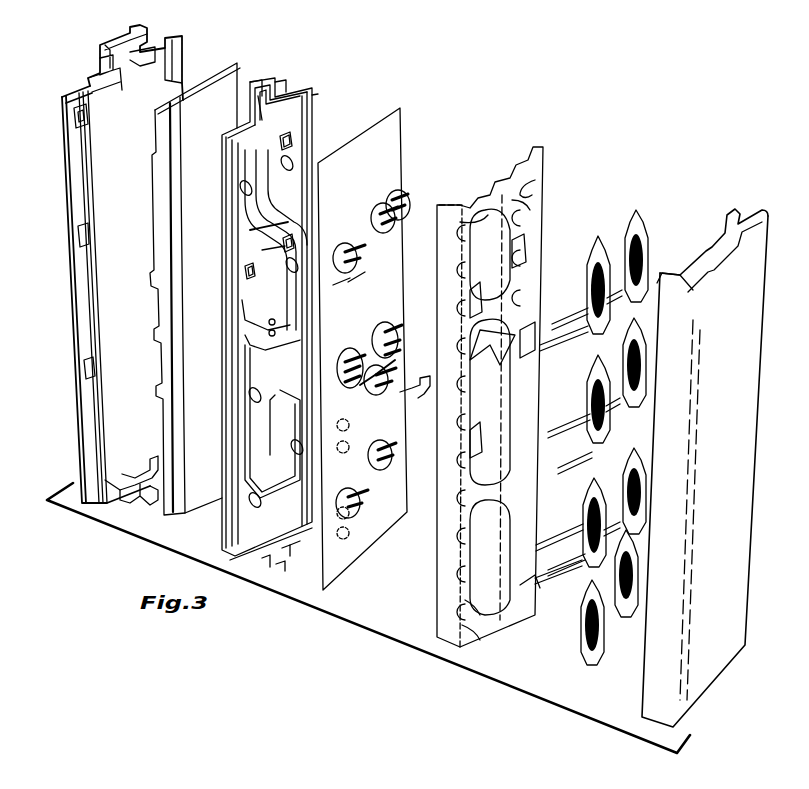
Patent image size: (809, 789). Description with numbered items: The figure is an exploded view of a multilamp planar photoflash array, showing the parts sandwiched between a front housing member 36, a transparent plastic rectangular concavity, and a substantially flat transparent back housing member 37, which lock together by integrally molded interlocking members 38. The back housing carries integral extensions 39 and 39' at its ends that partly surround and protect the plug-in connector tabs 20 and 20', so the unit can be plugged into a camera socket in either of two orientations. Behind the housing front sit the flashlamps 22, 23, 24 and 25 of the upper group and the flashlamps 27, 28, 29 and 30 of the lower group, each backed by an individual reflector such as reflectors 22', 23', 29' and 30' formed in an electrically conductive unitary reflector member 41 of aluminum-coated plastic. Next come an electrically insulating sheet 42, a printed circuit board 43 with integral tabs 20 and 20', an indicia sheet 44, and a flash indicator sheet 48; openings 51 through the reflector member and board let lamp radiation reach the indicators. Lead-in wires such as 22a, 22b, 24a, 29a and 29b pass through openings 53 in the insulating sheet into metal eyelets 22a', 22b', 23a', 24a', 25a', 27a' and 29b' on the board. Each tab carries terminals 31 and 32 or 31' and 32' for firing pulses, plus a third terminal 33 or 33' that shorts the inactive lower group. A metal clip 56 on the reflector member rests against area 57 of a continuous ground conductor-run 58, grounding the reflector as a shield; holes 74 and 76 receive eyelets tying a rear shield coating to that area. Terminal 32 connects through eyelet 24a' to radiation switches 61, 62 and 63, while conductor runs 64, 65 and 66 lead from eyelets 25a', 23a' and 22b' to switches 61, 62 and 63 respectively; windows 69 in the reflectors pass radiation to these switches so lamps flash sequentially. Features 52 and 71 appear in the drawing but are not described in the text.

The plug-in connector tab 20 is at (304, 527).
The second plug-in connector tab 20' is at (300, 80).
The flashlamp 22 is at (597, 272).
The reflector 22' is at (445, 232).
The lead-in wire 22a is at (564, 343).
The metal eyelet 22a' is at (344, 284).
The lead-in wire 22b is at (568, 311).
The metal eyelet 22b' is at (373, 265).
The flashlamp 23 is at (642, 246).
The reflector 23' is at (551, 181).
The metal eyelet 23a' is at (376, 209).
The flashlamp 24 is at (586, 392).
The lead-in wire 24a is at (566, 437).
The metal eyelet 24a' is at (358, 354).
The flashlamp 25 is at (638, 410).
The metal eyelet 25a' is at (384, 326).
The flashlamp 27 is at (585, 525).
The metal eyelet 27a' is at (373, 439).
The flashlamp 28 is at (622, 455).
The flashlamp 29 is at (573, 622).
The reflector 29' is at (438, 627).
The lead-in wire 29a is at (538, 578).
The lead-in wire 29b is at (560, 550).
The metal eyelet 29b' is at (370, 499).
The flashlamp 30 is at (623, 584).
The reflector 30' is at (525, 598).
The electrical terminal 31 is at (282, 575).
The electrical terminal 31' is at (276, 69).
The electrical terminal 32 is at (255, 568).
The electrical terminal 32' is at (309, 83).
The third terminal 33 is at (301, 554).
The third terminal 33' is at (227, 108).
The front housing member 36 is at (760, 411).
The back housing member 37 is at (70, 313).
The interlocking members 38 is at (78, 236).
The integral extension 39 is at (131, 495).
The integral extension 39' is at (135, 51).
The electrically conductive unitary reflector member 41 is at (540, 150).
The electrically insulating sheet 42 is at (404, 126).
The printed circuit board 43 is at (312, 100).
The indicia sheet 44 is at (258, 95).
The flash indicator sheet 48 is at (215, 88).
The openings 51 is at (240, 193).
The aperture 52 is at (460, 436).
The openings 53 is at (338, 246).
The metal clip 56 is at (415, 405).
The area of electrical ground circuit 57 is at (262, 337).
The continuous conductor-run 58 is at (245, 180).
The radiation switch 61 is at (245, 275).
The radiation switch 62 is at (262, 250).
The radiation switch 63 is at (292, 141).
The conductor run 64 is at (245, 303).
The conductor run 65 is at (250, 230).
The conductor run 66 is at (258, 148).
The windows 69 is at (525, 202).
The holes 71 is at (350, 510).
The hole 74 is at (270, 318).
The hole 76 is at (275, 336).